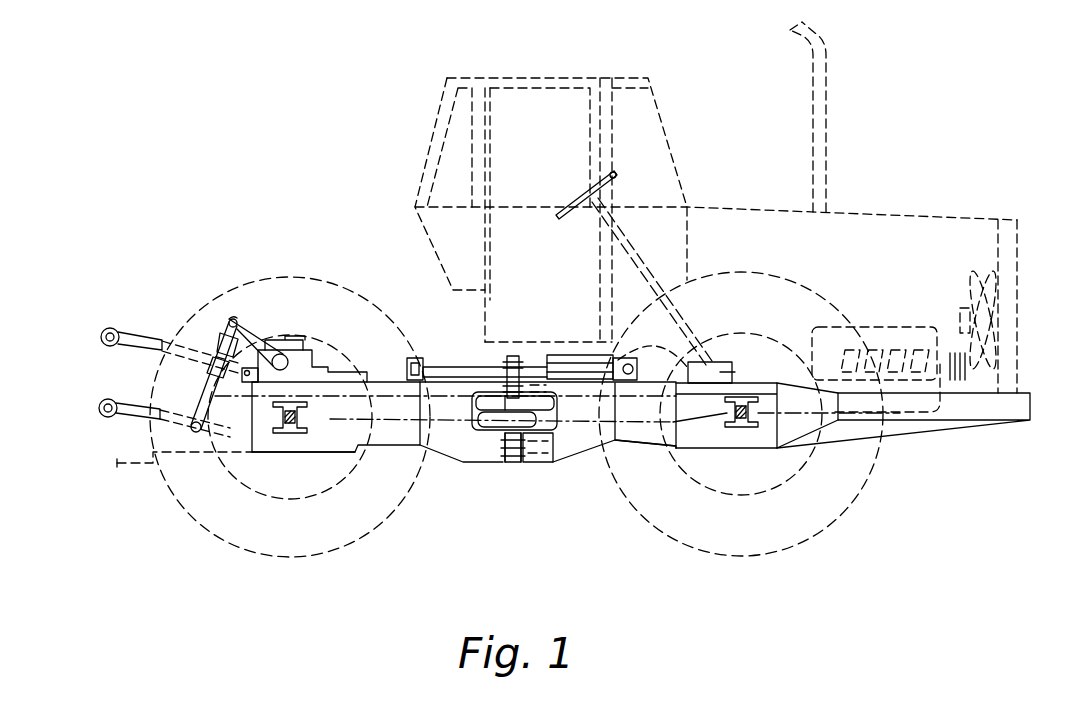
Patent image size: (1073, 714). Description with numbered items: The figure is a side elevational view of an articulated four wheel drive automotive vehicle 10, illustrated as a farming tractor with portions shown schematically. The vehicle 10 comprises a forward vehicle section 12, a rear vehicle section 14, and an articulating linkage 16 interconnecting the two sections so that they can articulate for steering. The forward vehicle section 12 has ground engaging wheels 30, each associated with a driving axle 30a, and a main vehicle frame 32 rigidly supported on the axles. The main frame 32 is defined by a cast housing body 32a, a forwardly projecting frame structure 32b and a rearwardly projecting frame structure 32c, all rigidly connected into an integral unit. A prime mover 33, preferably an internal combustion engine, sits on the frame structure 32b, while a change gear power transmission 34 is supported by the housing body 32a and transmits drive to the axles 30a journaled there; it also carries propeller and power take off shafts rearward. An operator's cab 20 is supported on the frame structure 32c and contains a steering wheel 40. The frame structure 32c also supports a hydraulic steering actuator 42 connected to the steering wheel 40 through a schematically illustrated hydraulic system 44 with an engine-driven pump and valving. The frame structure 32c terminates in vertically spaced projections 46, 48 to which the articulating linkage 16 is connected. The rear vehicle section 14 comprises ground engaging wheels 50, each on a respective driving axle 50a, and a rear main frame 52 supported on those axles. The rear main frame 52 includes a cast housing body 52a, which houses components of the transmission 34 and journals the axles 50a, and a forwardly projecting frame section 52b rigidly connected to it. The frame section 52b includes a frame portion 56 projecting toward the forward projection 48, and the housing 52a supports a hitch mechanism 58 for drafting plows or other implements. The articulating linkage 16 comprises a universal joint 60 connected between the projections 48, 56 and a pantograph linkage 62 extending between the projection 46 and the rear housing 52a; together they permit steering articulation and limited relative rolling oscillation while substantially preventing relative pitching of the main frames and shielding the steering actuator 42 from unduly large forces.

The articulated four wheel drive automotive vehicle 10 is at (247, 122).
The forward vehicle section 12 is at (907, 452).
The rear vehicle section 14 is at (427, 477).
The articulating linkage 16 is at (472, 360).
The operator's cab 20 is at (597, 74).
The ground engaging wheels 30 is at (722, 557).
The driving axle 30a is at (742, 427).
The main vehicle frame 32 is at (704, 452).
The cast housing body 32a is at (775, 450).
The forwardly projecting frame structure 32b is at (940, 422).
The rearwardly projecting frame structure 32c is at (590, 447).
The prime mover 33 is at (884, 323).
The change gear power transmission 34 is at (668, 363).
The steering wheel 40 is at (619, 176).
The hydraulic steering actuator 42 is at (562, 358).
The hydraulic system 44 is at (726, 372).
The projection 46 is at (531, 358).
The projection 48 is at (553, 462).
The ground engaging wheels 50 is at (228, 547).
The driving axle 50a is at (277, 422).
The rear main frame 52 is at (412, 448).
The cast housing body 52a is at (313, 443).
The forwardly projecting frame section 52b is at (465, 452).
The frame portion 56 is at (490, 462).
The hitch mechanism 58 is at (281, 328).
The universal joint 60 is at (513, 468).
The pantograph linkage 62 is at (441, 360).